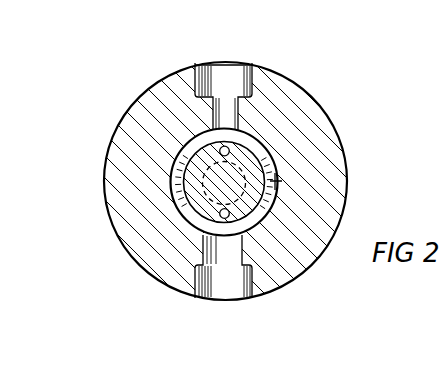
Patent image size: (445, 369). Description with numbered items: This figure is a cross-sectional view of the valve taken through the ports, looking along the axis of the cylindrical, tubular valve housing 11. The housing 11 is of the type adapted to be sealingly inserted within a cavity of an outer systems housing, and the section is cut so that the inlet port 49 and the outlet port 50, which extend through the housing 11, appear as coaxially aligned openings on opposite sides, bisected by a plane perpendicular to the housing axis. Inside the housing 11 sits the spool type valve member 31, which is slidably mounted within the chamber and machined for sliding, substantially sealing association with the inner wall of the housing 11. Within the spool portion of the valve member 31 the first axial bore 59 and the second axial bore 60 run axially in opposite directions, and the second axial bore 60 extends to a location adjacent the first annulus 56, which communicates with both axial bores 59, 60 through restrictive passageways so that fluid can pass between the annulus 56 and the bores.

The valve housing 11 is at (100, 123).
The spool type valve member 31 is at (189, 125).
The inlet port 49 is at (239, 255).
The outlet port 50 is at (236, 128).
The first annulus 56 is at (278, 180).
The first axial bore 59 is at (229, 152).
The second axial bore 60 is at (220, 214).